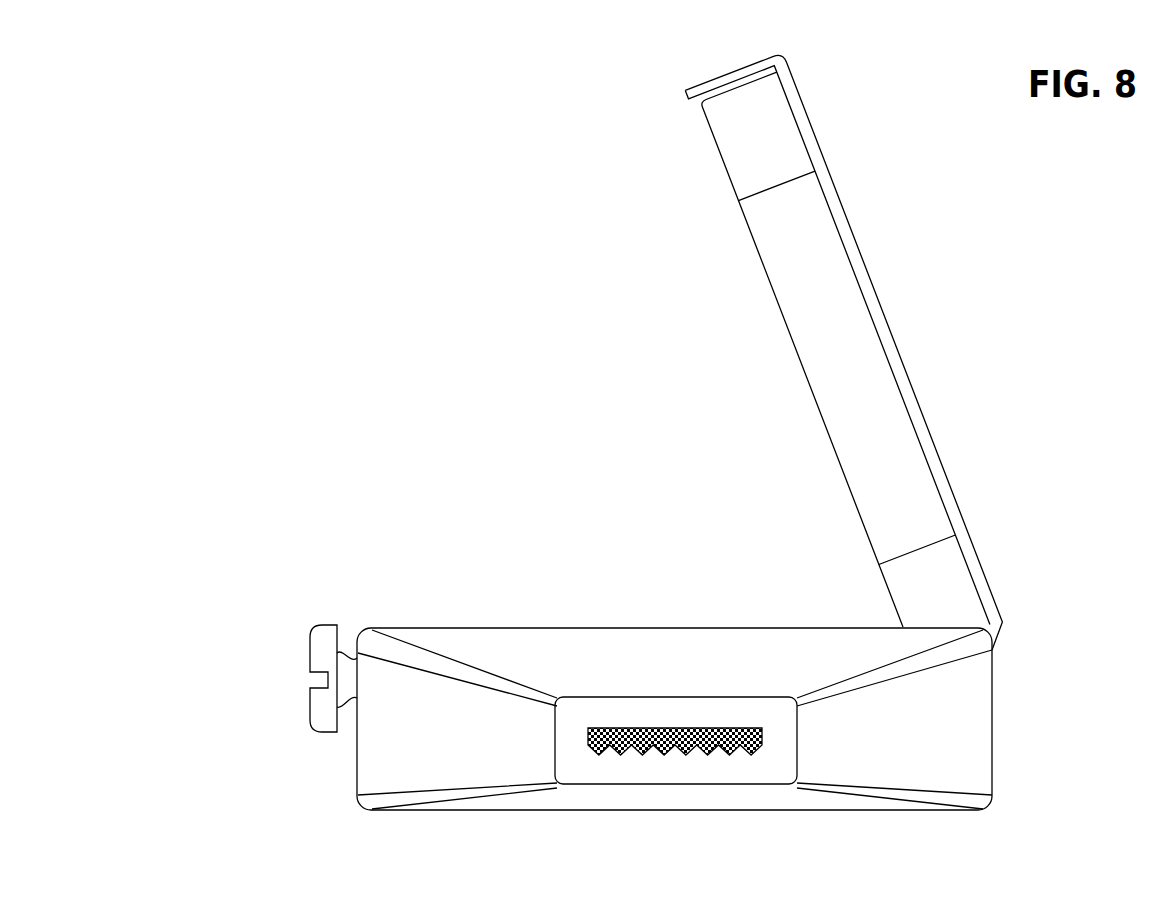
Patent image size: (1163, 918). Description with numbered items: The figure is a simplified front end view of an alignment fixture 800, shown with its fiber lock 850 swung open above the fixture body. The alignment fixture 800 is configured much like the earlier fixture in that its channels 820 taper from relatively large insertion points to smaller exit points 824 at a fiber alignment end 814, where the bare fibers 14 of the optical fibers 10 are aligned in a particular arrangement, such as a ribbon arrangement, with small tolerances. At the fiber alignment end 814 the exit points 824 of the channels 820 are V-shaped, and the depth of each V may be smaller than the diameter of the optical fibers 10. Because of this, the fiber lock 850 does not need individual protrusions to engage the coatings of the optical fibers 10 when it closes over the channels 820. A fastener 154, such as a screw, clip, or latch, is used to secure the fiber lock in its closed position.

The alignment fixture 800 is at (391, 273).
The fiber lock 850 is at (905, 370).
The fastener 154 is at (310, 658).
The fiber alignment end 814 is at (650, 705).
The optical fiber 10 is at (642, 706).
The exit point 824 is at (672, 706).
The bare fiber 14 is at (672, 706).
The channel 820 is at (620, 756).